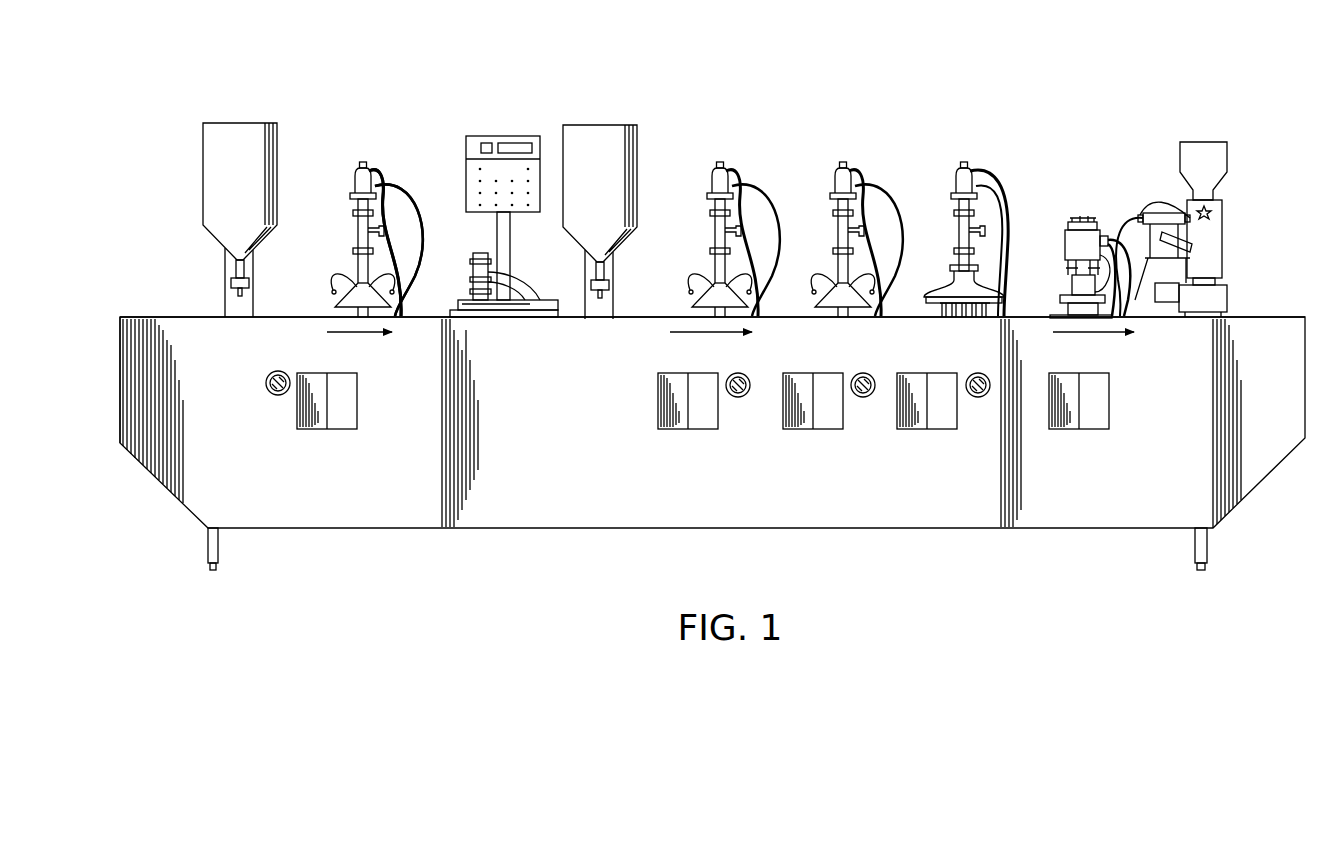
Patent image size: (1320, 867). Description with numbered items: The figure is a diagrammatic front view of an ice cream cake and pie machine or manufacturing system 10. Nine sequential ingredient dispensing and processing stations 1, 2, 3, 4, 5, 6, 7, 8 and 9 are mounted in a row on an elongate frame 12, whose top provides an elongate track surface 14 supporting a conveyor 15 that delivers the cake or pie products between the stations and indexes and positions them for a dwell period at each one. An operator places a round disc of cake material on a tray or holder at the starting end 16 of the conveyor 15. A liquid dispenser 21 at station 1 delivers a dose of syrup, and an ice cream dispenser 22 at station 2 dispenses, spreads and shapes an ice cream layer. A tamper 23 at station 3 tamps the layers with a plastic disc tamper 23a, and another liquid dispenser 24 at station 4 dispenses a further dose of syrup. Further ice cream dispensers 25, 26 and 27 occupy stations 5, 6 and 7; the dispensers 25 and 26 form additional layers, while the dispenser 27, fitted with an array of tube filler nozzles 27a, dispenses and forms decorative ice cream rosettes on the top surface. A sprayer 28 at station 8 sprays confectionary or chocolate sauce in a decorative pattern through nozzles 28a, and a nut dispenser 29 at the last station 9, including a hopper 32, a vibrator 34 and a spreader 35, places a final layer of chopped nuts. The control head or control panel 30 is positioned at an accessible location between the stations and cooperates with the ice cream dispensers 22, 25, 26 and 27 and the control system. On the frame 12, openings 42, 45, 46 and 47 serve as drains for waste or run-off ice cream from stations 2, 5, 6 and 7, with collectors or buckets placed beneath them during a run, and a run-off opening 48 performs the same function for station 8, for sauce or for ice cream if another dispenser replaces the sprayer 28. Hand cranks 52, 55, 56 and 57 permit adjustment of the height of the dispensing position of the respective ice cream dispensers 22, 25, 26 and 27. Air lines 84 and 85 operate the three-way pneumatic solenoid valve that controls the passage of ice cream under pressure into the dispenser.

The station 1 is at (232, 114).
The station 2 is at (359, 114).
The station 3 is at (466, 247).
The station 4 is at (590, 114).
The station 5 is at (717, 114).
The station 6 is at (837, 114).
The station 7 is at (957, 114).
The station 8 is at (1079, 114).
The station 9 is at (1194, 114).
The ice cream cake and pie machine or manufacturing system 10 is at (426, 549).
The elongate frame 12 is at (540, 430).
The elongate track surface 14 is at (672, 310).
The conveyor 15 is at (277, 317).
The starting end 16 is at (147, 310).
The liquid dispenser 21 is at (284, 162).
The ice cream dispenser 22 is at (350, 182).
The tamper 23 is at (470, 271).
The plastic disc tamper 23a is at (476, 319).
The liquid dispenser 24 is at (638, 153).
The ice cream dispenser 25 is at (706, 227).
The ice cream dispenser 26 is at (833, 230).
The ice cream dispenser 27 is at (955, 240).
The tube filler nozzles 27a is at (968, 306).
The sprayer 28 is at (1064, 231).
The nozzles 28a is at (1072, 281).
The nut dispenser 29 is at (1225, 245).
The control head or control panel 30 is at (498, 136).
The hopper 32 is at (1230, 171).
The vibrator 34 is at (1160, 212).
The spreader 35 is at (1228, 297).
The opening 42 is at (329, 429).
The opening 45 is at (706, 430).
The opening 46 is at (830, 430).
The opening 47 is at (935, 430).
The run-off opening 48 is at (1098, 430).
The hand crank 52 is at (267, 376).
The hand crank 55 is at (739, 372).
The hand crank 56 is at (864, 372).
The hand crank 57 is at (978, 398).
The air line 84 is at (375, 170).
The air line 85 is at (398, 186).